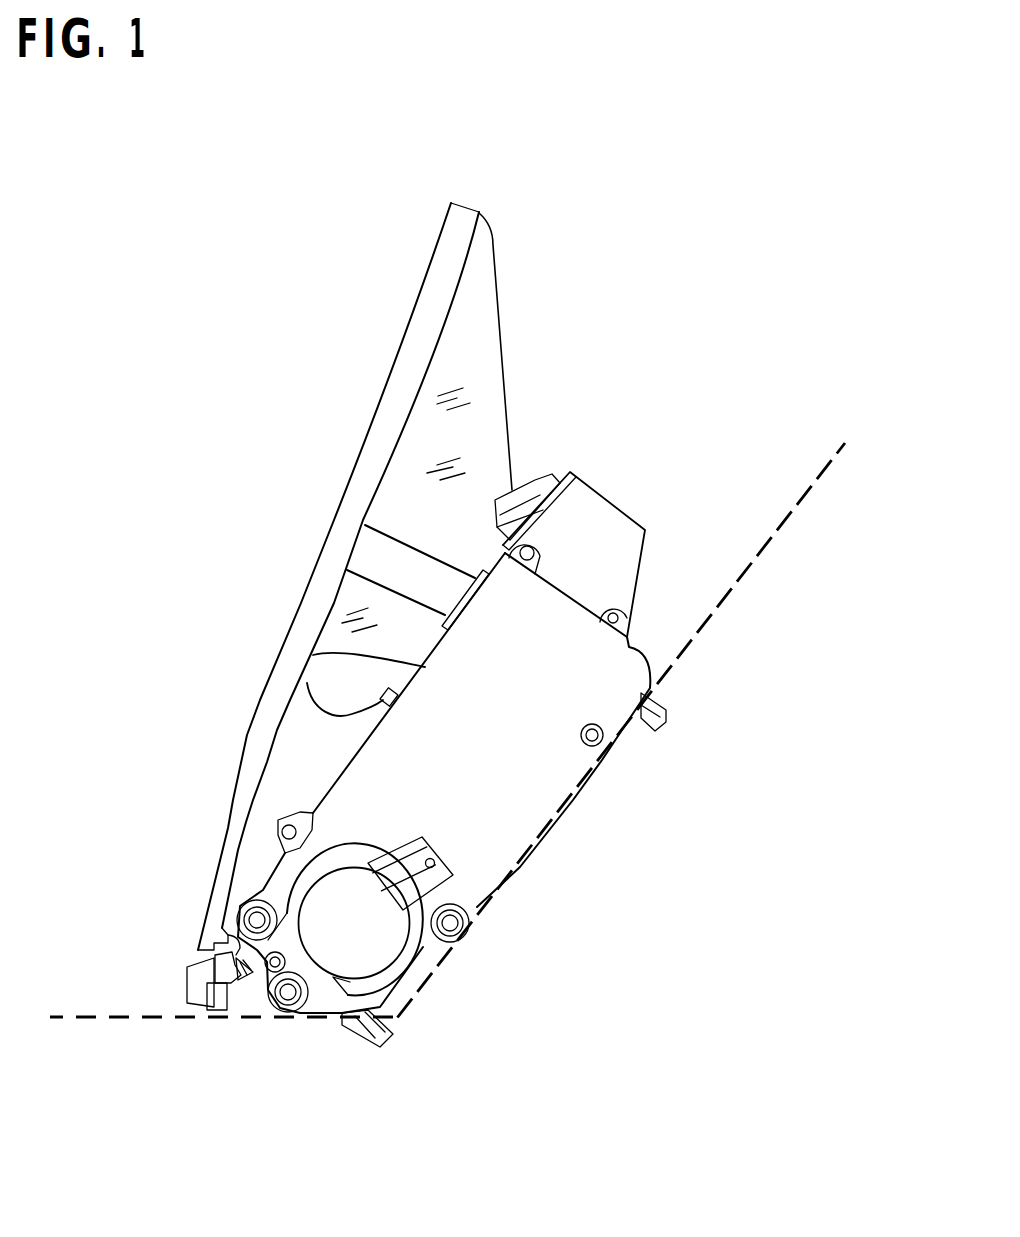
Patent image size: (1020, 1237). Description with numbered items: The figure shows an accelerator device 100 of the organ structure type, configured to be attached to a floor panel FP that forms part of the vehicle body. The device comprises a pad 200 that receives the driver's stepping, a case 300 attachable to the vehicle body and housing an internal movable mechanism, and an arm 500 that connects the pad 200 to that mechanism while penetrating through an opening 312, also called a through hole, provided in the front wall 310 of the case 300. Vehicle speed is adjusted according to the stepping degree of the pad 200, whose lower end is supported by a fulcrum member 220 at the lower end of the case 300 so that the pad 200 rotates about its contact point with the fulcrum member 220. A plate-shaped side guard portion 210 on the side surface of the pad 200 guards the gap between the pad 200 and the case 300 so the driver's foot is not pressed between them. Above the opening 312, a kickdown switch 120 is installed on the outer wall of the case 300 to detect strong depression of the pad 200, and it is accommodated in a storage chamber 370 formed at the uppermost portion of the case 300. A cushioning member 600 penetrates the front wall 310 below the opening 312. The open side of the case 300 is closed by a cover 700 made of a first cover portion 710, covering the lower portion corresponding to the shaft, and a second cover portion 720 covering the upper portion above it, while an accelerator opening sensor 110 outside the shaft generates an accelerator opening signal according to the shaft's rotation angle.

The accelerator device 100 is at (743, 343).
The accelerator opening sensor 110 is at (313, 950).
The kickdown switch 120 is at (533, 480).
The pad 200 is at (432, 313).
The side guard portion 210 is at (475, 325).
The fulcrum member 220 is at (221, 956).
The case 300 is at (452, 724).
The front wall 310 is at (351, 754).
The opening 312 is at (470, 572).
The storage chamber 370 is at (600, 520).
The arm 500 is at (370, 557).
The cushioning member 600 is at (305, 683).
The cover 700 is at (674, 878).
The first cover portion 710 is at (440, 948).
The second cover portion 720 is at (540, 777).
The floor panel FP is at (787, 522).